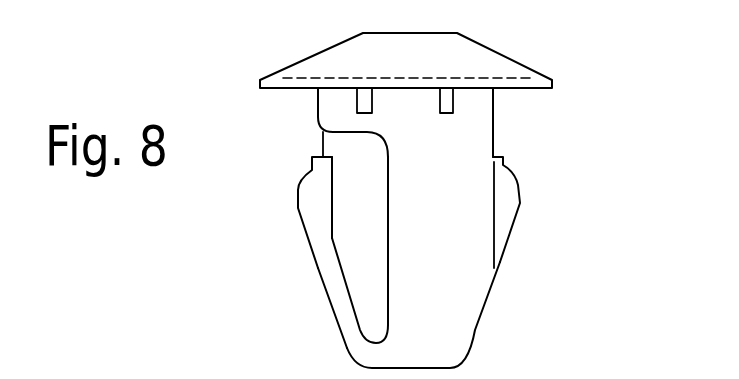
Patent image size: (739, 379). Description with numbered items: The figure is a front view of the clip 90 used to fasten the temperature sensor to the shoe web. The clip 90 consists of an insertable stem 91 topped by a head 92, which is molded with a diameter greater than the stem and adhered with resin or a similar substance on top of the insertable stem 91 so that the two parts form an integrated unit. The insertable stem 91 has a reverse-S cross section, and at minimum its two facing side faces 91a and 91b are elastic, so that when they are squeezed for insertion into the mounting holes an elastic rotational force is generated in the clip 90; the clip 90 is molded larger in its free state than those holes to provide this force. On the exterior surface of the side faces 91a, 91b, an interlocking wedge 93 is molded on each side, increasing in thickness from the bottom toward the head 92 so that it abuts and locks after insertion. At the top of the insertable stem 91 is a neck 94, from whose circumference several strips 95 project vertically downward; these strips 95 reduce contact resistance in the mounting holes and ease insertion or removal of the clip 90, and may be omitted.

The clip 90 is at (560, 53).
The insertable stem 91 is at (455, 348).
The side face 91a is at (495, 272).
The side face 91b is at (318, 283).
The head 92 is at (480, 46).
The interlocking wedge 93 is at (303, 192).
The neck 94 is at (477, 104).
The strips 95 is at (433, 88).